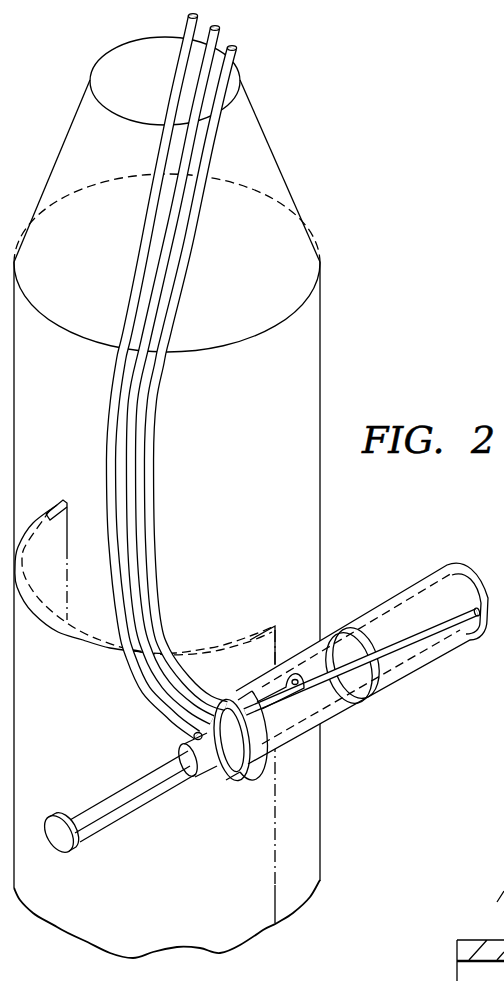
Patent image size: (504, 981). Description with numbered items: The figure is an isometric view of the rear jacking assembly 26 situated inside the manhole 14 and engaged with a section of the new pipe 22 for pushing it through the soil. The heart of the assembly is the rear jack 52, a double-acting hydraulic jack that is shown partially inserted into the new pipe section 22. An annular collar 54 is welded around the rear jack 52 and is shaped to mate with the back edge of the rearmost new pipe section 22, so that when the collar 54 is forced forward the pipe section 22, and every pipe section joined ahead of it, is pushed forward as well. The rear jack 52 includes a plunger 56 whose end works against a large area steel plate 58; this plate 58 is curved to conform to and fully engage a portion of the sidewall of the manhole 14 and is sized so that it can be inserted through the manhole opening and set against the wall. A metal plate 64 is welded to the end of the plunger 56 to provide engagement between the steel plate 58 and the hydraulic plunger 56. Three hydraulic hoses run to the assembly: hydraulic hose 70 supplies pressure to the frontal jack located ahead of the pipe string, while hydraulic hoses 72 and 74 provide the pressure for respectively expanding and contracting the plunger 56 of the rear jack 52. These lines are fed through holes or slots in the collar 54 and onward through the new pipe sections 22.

The manhole 14 is at (273, 153).
The new pipe section 22 is at (396, 597).
The rear jacking assembly 26 is at (263, 716).
The rear jack 52 is at (214, 775).
The annular collar 54 is at (224, 701).
The plunger 56 is at (118, 789).
The steel plate 58 is at (54, 506).
The metal plate 64 is at (80, 842).
The hydraulic hose 70 is at (433, 640).
The hydraulic hose 72 is at (249, 694).
The hydraulic hose 74 is at (172, 707).